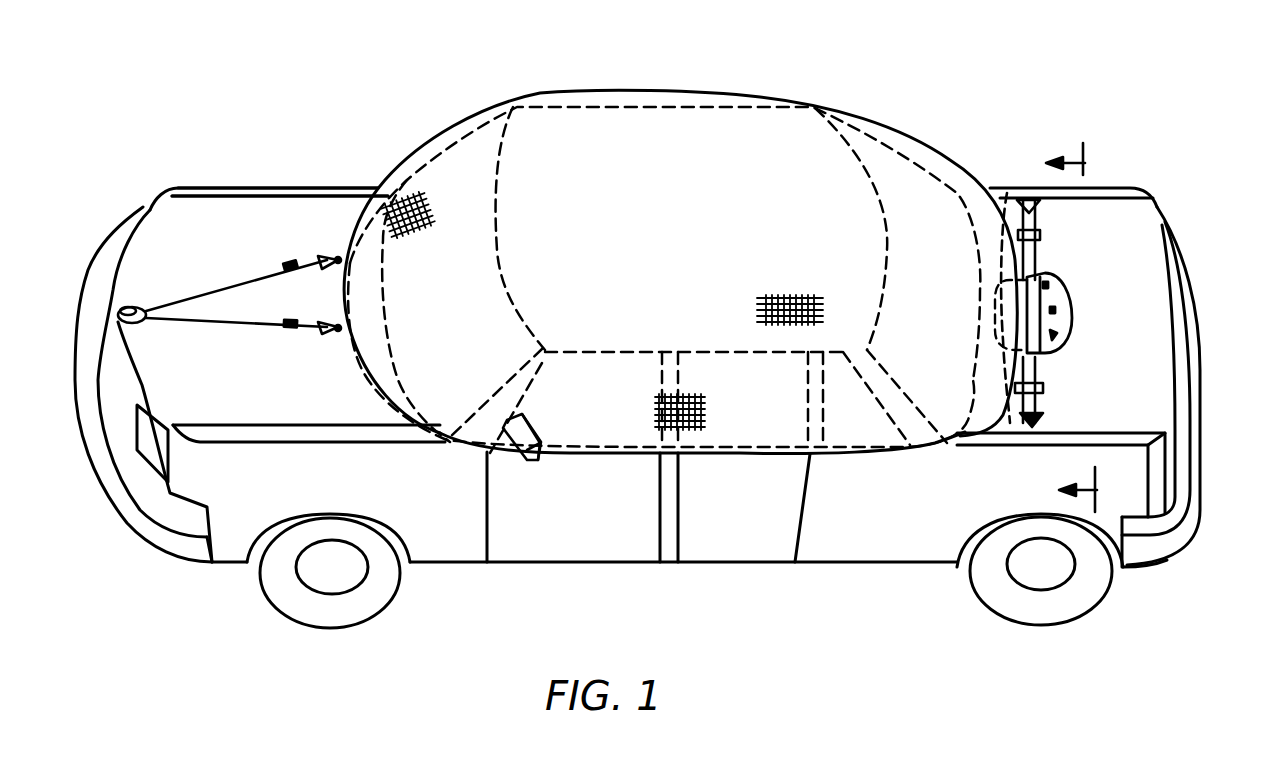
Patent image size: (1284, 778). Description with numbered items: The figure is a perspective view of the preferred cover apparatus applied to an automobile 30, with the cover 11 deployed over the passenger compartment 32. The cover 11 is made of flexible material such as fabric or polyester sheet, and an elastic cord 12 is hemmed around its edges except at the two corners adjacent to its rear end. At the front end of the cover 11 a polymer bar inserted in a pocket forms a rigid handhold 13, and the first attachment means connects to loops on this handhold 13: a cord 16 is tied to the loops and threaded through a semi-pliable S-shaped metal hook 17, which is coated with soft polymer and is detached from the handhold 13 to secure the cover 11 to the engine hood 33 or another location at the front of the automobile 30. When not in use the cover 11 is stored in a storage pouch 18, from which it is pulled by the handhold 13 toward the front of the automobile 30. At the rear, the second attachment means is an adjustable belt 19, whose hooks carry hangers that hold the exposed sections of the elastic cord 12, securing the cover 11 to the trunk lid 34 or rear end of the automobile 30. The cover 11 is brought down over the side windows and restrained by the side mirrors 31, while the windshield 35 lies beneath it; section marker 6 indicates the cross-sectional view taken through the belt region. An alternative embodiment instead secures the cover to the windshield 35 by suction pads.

The cover 11 is at (606, 84).
The elastic cord 12 is at (1027, 197).
The handhold 13 is at (334, 255).
The cord 16 is at (197, 300).
The metal hook 17 is at (137, 306).
The storage pouch 18 is at (1074, 272).
The adjustable belt 19 is at (1058, 372).
The automobile 30 is at (637, 408).
The side mirrors 31 is at (542, 425).
The passenger compartment 32 is at (746, 129).
The engine hood 33 is at (240, 217).
The trunk lid 34 is at (1140, 228).
The windshield 35 is at (460, 177).
The section line 6 is at (1063, 321).